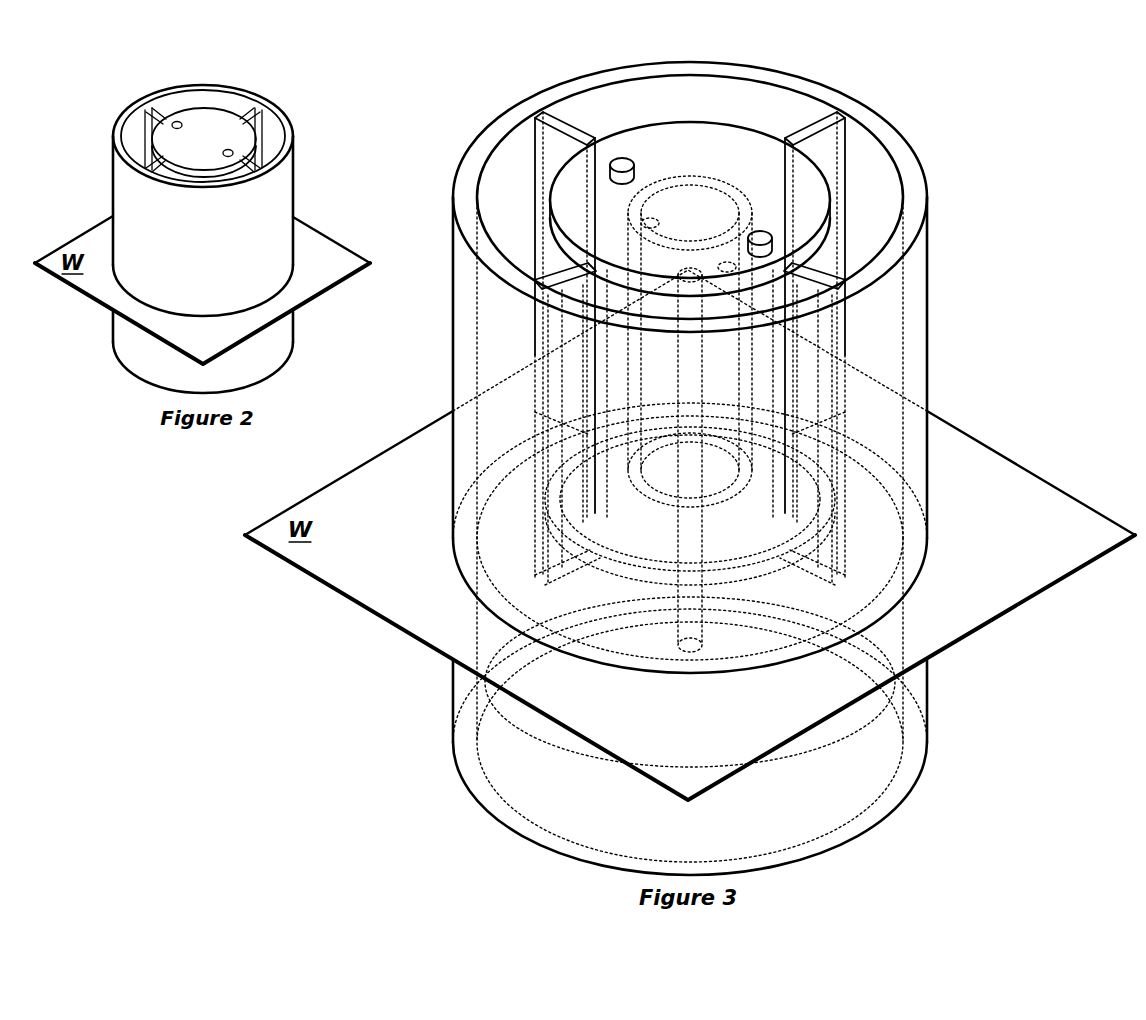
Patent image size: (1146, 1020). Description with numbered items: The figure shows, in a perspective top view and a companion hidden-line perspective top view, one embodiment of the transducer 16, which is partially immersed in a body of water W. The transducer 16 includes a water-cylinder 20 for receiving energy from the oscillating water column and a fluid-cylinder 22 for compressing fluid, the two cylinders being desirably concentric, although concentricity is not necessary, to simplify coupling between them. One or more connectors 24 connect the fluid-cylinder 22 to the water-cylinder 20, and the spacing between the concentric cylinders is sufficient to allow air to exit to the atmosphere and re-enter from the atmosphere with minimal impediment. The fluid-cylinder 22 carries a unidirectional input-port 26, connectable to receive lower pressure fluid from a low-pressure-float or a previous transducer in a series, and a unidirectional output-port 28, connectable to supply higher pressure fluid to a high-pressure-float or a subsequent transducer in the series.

In FIG. 2, the transducer 16 is at (337, 114).
In FIG. 3, the transducer 16 is at (1010, 152).
In FIG. 2, the water-cylinder 20 is at (112, 343).
In FIG. 3, the water-cylinder 20 is at (450, 702).
In FIG. 2, the fluid-cylinder 22 is at (192, 151).
In FIG. 3, the fluid-cylinder 22 is at (675, 223).
In FIG. 2, the connectors 24 is at (170, 104).
In FIG. 3, the connectors 24 is at (547, 140).
In FIG. 2, the unidirectional input-port 26 is at (176, 130).
In FIG. 3, the unidirectional input-port 26 is at (640, 162).
In FIG. 2, the unidirectional output-port 28 is at (232, 146).
In FIG. 3, the unidirectional output-port 28 is at (760, 228).